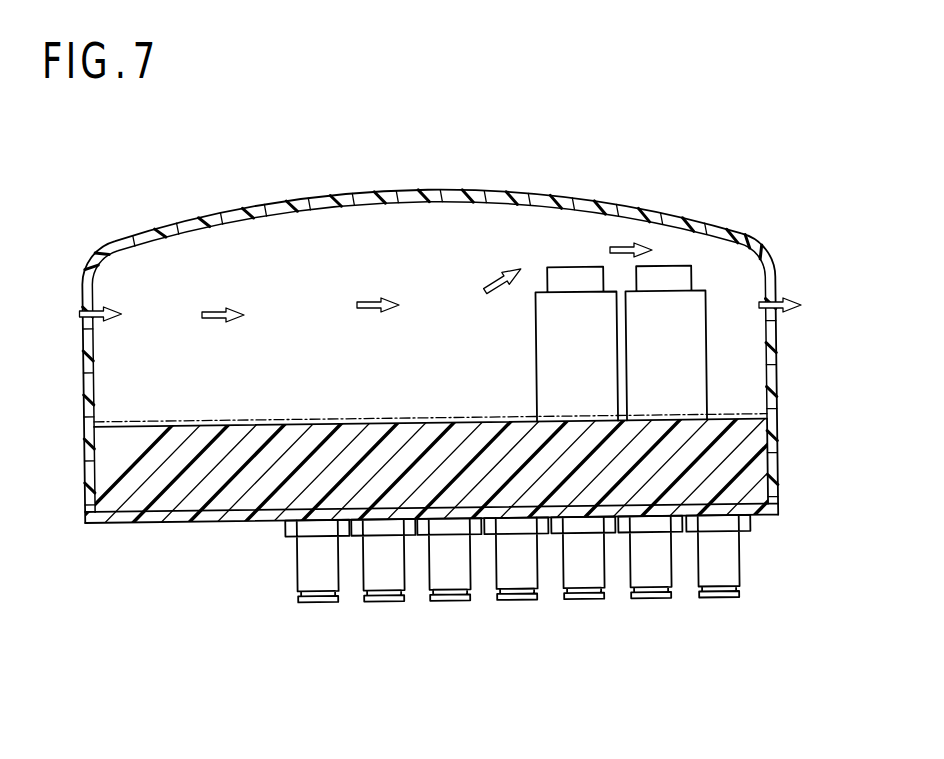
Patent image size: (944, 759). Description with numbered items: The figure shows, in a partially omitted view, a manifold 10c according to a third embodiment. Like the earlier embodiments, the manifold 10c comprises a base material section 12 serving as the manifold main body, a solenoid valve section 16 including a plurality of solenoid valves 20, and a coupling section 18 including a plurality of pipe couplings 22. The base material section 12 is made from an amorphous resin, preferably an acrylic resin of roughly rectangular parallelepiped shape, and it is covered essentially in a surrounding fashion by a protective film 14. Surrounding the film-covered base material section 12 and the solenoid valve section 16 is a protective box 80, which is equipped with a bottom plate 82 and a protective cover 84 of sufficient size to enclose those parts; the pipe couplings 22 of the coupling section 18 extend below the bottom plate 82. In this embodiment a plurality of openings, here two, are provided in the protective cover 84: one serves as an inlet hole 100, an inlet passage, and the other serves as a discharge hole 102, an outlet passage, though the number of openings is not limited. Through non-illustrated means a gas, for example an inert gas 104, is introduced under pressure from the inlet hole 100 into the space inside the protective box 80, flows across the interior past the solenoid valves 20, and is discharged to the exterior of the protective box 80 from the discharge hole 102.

The manifold 10c is at (284, 176).
The protective box 80 is at (632, 163).
The protective cover 84 is at (88, 372).
The solenoid valve section 16 is at (736, 278).
The base material section 12 is at (760, 477).
The protective film 14 is at (157, 423).
The bottom plate 82 is at (118, 519).
The solenoid valve 20 is at (695, 383).
The coupling section 18 is at (577, 641).
The pipe coupling 22 is at (718, 574).
The inlet hole 100 is at (91, 325).
The discharge hole 102 is at (774, 318).
The inert gas 104 is at (215, 312).